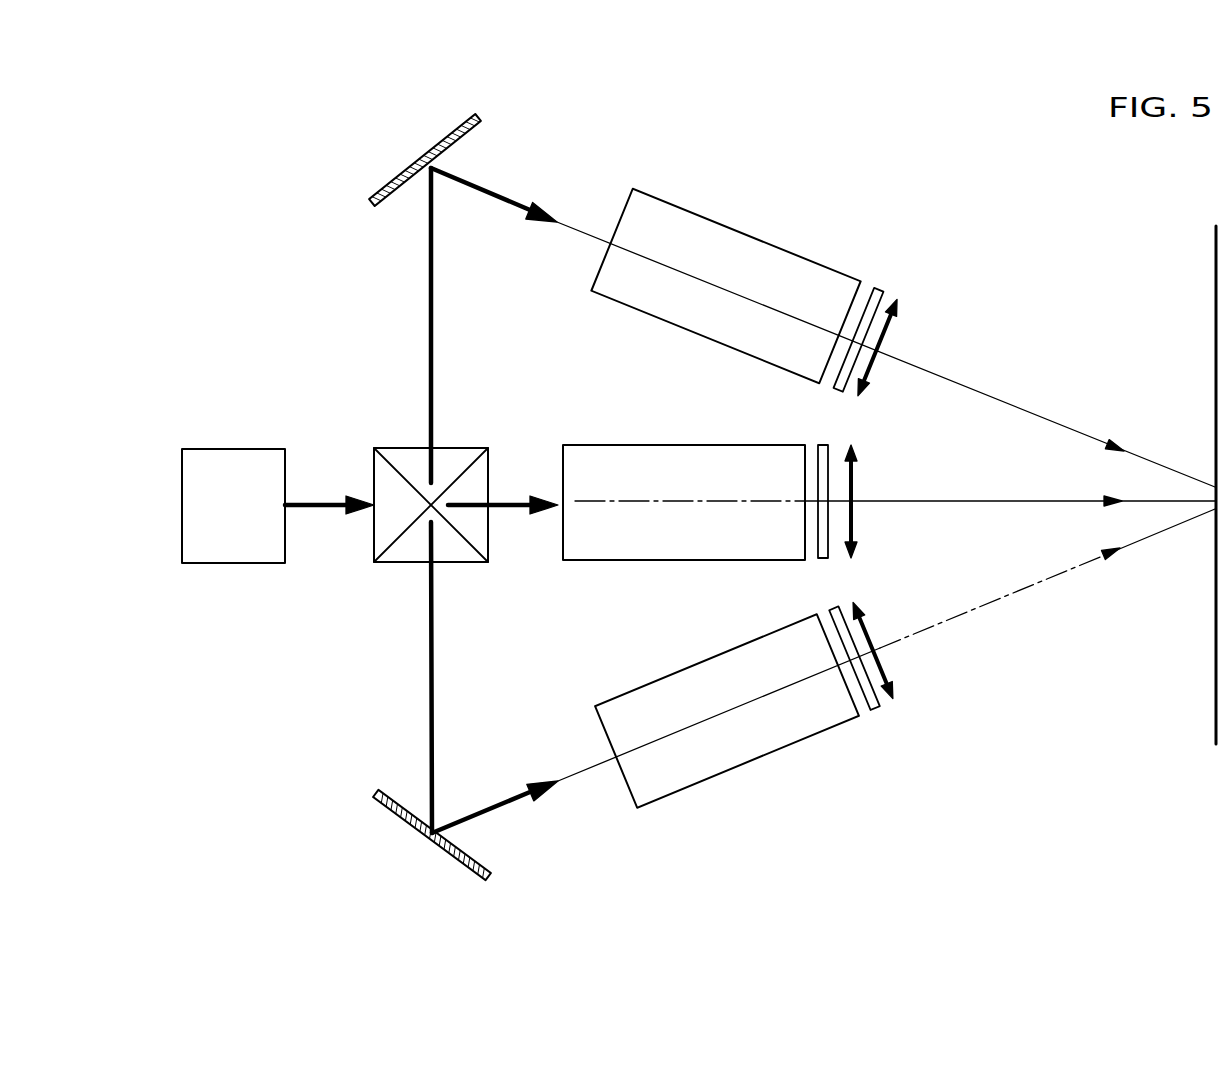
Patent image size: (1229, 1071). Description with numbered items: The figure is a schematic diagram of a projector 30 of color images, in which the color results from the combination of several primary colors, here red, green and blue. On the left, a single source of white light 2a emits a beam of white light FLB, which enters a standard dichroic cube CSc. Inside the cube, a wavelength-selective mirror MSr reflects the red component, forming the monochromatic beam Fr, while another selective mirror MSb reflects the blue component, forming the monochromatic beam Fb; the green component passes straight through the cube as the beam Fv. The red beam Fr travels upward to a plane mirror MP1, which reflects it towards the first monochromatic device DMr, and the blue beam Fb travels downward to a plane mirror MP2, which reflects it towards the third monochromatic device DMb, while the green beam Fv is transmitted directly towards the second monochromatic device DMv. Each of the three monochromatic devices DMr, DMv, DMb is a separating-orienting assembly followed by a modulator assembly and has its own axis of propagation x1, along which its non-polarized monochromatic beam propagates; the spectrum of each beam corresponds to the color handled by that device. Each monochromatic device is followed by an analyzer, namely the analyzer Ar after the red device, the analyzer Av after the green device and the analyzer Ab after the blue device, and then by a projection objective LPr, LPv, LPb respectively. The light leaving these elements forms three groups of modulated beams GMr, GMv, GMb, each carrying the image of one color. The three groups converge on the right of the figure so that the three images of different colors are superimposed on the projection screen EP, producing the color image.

The source of white light 2a is at (245, 447).
The beam of white light FLB is at (322, 505).
The dichroic cube CSc is at (470, 447).
The selective mirror MSb is at (400, 462).
The wavelength-selective mirror MSr is at (403, 547).
The monochromatic beam Fv is at (502, 508).
The monochromatic beam Fr is at (490, 188).
The monochromatic beam Fb is at (433, 717).
The plane mirror MP1 is at (400, 180).
The plane mirror MP2 is at (402, 818).
The group of modulated beams GMr is at (963, 380).
The group of modulated beams GMv is at (975, 499).
The group of modulated beams GMb is at (935, 623).
The axis of propagation x1 is at (597, 237).
The monochromatic device DMv is at (668, 443).
The analyzer Av is at (825, 443).
The projection objective LPv is at (858, 548).
The monochromatic device DMr is at (760, 240).
The analyzer Ar is at (877, 287).
The projection objective LPr is at (903, 302).
The monochromatic device DMb is at (725, 777).
The analyzer Ab is at (872, 710).
The projection objective LPb is at (897, 688).
The projection screen EP is at (1215, 708).
The projector 30 is at (950, 210).